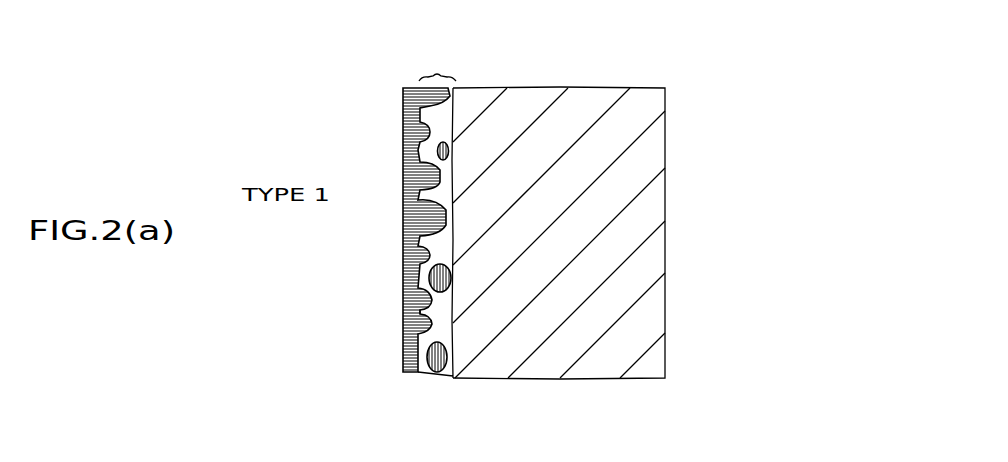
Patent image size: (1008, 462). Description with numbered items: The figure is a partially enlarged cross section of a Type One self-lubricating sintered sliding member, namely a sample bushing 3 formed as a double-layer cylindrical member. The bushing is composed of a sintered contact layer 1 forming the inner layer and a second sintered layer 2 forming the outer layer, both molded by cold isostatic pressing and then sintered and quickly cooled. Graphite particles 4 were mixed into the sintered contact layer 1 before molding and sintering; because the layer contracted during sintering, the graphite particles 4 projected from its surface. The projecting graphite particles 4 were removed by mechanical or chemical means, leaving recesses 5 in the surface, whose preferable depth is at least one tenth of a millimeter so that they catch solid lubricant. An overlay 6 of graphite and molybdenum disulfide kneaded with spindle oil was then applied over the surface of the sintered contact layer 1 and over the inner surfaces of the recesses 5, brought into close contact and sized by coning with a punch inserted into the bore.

The sintered contact layer 1 is at (434, 71).
The second sintered layer 2 is at (502, 108).
The sample bushing 3 is at (668, 270).
The graphite particles 4 is at (438, 376).
The recesses 5 is at (422, 318).
The overlay 6 is at (414, 461).